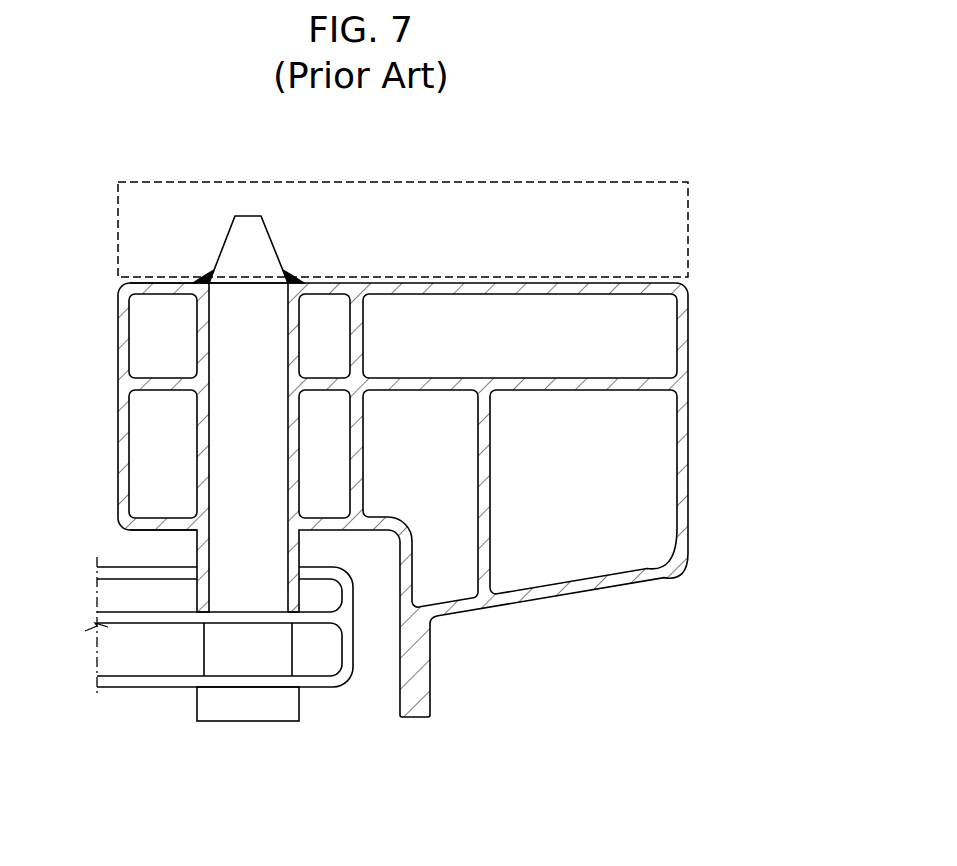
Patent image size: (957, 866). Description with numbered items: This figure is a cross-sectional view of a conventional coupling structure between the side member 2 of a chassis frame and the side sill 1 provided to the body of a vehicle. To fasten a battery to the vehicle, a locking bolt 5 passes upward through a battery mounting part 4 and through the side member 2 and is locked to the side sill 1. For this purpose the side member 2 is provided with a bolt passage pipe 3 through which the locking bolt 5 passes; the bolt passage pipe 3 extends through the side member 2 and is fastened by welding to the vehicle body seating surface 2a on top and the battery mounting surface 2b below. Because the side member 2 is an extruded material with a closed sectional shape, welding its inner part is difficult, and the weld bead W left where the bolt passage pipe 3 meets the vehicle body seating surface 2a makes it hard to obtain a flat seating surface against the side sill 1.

The side sill 1 is at (598, 180).
The side member 2 is at (122, 425).
The vehicle body seating surface 2a is at (158, 280).
The battery mounting surface 2b is at (165, 530).
The bolt passage pipe 3 is at (255, 352).
The battery mounting part 4 is at (158, 688).
The locking bolt 5 is at (255, 710).
The weld bead W is at (204, 277).